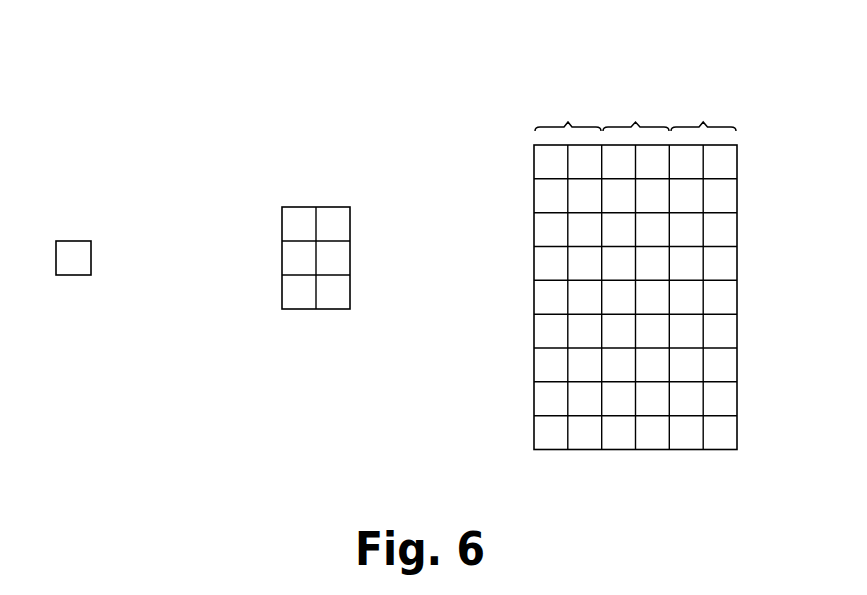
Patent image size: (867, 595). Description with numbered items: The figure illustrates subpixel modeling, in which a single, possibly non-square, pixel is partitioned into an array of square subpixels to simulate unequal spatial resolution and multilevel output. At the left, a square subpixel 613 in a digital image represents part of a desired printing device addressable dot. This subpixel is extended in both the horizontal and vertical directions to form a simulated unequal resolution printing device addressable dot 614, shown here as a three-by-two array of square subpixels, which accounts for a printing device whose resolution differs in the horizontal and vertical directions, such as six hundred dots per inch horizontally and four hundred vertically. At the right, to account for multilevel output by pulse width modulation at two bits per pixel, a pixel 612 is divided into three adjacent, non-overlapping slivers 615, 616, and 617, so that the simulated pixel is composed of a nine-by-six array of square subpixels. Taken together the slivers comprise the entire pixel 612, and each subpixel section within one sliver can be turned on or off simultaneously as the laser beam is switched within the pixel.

The pixel 612 is at (640, 60).
The square subpixel 613 is at (91, 257).
The simulated unequal resolution printing device addressable dot 614 is at (320, 168).
The sliver 615 is at (568, 114).
The sliver 616 is at (636, 114).
The sliver 617 is at (703, 114).